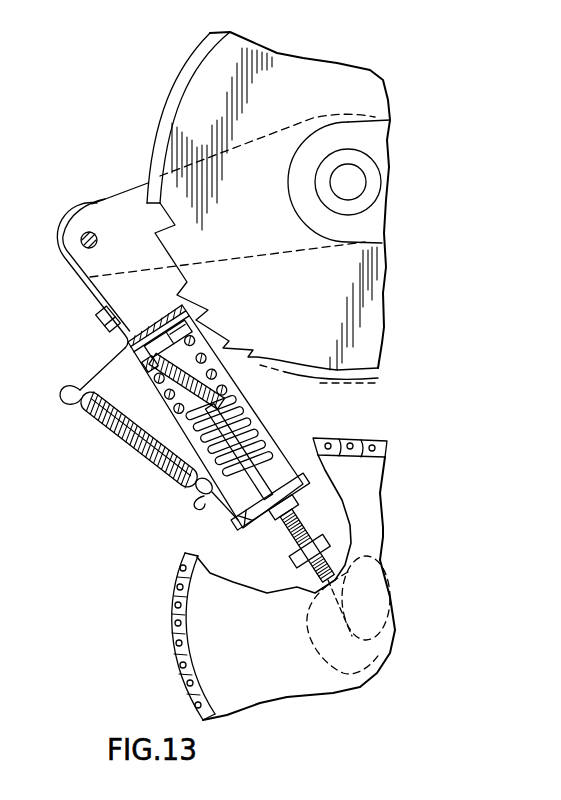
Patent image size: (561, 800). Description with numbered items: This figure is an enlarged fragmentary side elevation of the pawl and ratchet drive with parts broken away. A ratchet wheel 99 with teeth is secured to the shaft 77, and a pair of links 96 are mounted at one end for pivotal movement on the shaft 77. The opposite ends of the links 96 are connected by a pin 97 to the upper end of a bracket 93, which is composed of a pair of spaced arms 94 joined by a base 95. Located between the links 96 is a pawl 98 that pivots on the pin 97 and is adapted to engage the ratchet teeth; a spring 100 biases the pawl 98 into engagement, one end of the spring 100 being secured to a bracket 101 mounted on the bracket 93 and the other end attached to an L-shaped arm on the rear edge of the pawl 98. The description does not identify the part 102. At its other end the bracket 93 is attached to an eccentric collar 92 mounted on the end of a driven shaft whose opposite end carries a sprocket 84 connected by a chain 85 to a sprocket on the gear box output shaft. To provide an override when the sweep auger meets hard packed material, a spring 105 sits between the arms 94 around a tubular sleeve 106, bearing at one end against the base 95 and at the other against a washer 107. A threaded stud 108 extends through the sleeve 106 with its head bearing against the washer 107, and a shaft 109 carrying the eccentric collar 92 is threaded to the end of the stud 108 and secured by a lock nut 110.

The shaft 77 is at (360, 180).
The sprocket 84 is at (210, 643).
The chain 85 is at (172, 615).
The eccentric collar 92 is at (377, 590).
The bracket 93 is at (243, 532).
The arms 94 is at (285, 462).
The base 95 is at (287, 462).
The links 96 is at (128, 198).
The pin 97 is at (84, 236).
The pawl 98 is at (113, 283).
The ratchet wheel 99 is at (202, 101).
The spring 100 is at (135, 440).
The bracket 101 is at (227, 517).
The link rod 102 is at (100, 363).
The spring 105 is at (243, 403).
The tubular sleeve 106 is at (212, 358).
The washer 107 is at (195, 331).
The threaded stud 108 is at (173, 380).
The shaft 109 is at (323, 568).
The lock nut 110 is at (320, 547).